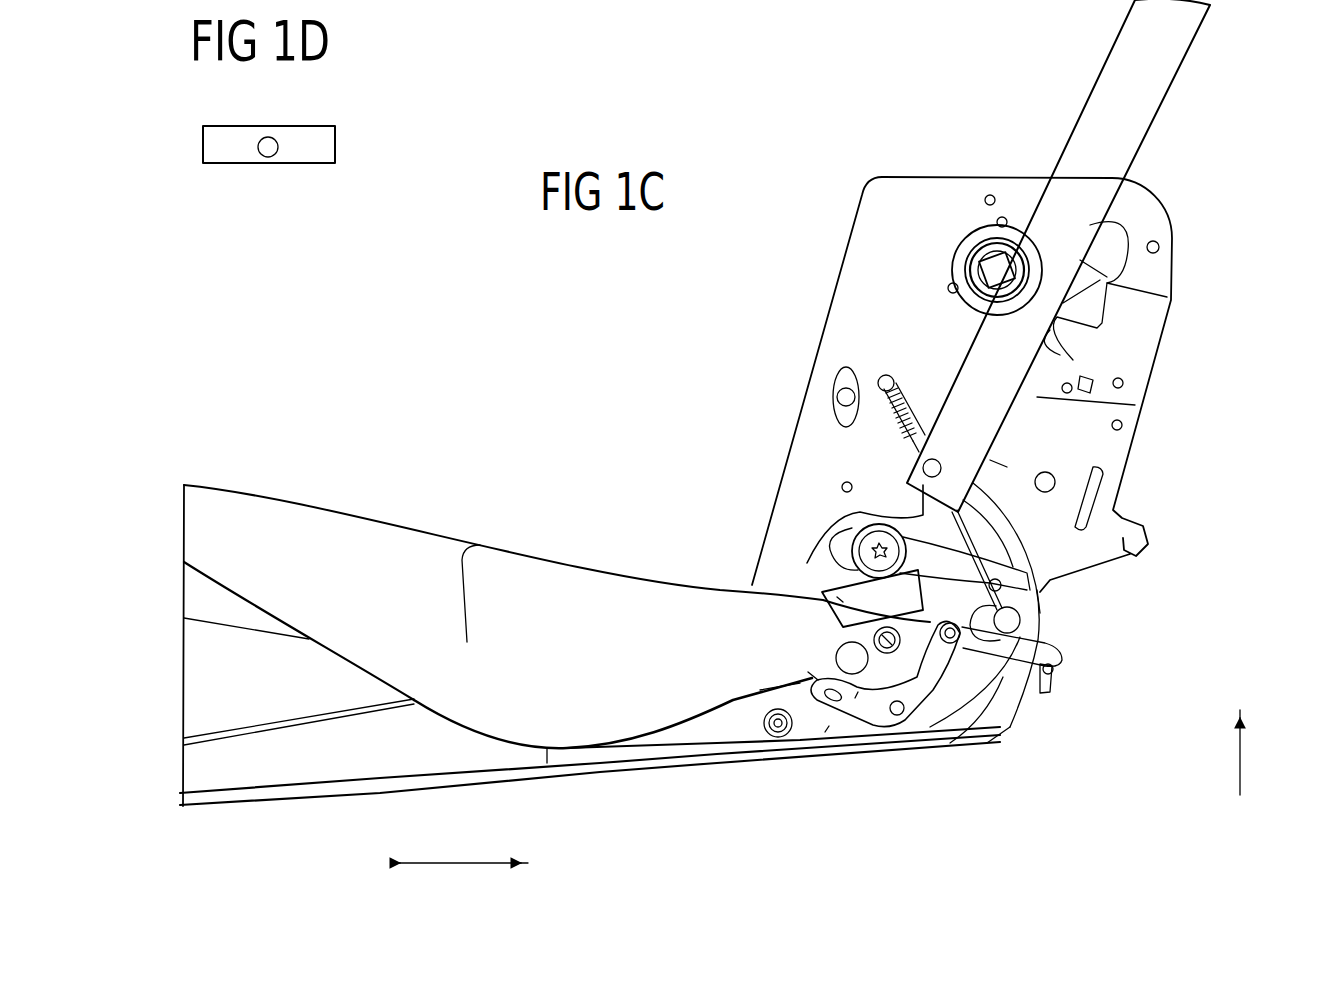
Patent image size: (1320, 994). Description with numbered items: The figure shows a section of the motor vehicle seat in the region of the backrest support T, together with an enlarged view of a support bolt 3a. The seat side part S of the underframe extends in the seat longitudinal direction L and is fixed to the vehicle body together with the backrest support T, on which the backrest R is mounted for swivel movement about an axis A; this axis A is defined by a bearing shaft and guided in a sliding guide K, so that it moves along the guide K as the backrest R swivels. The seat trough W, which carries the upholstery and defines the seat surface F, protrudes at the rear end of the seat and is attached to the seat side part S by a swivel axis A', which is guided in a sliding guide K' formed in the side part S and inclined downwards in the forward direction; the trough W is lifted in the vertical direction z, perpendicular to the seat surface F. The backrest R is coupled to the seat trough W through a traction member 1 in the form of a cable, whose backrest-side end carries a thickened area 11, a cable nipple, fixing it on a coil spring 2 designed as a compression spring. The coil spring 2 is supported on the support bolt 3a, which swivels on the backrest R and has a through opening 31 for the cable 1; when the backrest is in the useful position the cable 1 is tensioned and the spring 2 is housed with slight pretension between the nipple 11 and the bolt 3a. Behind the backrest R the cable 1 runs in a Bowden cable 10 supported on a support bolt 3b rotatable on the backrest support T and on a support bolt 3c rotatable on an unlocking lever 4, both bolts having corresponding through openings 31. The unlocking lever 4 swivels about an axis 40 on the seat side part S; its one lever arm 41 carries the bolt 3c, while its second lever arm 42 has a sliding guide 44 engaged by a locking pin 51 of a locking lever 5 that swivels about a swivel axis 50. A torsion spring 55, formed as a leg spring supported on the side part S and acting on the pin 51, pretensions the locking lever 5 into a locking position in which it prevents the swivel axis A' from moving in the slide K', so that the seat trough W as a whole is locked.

In FIG. 1D, the through opening 31 is at (268, 158).
In FIG. 1D, the support bolt 3a is at (316, 157).
In FIG. 1C, the support bolt 3a is at (937, 460).
In FIG. 1C, the traction member 1 is at (803, 597).
In FIG. 1C, the coil spring 2 is at (903, 438).
In FIG. 1C, the thickened area 11 is at (890, 375).
In FIG. 1C, the support bolt 3b is at (1015, 622).
In FIG. 1C, the support bolt 3c is at (962, 642).
In FIG. 1C, the Bowden cable 10 is at (1065, 658).
In FIG. 1C, the unlocking lever 4 is at (868, 735).
In FIG. 1C, the axis 40 is at (899, 715).
In FIG. 1C, the lever arm 41 is at (987, 743).
In FIG. 1C, the second lever arm 42 is at (855, 698).
In FIG. 1C, the sliding guide 44 is at (825, 732).
In FIG. 1C, the locking lever 5 is at (776, 690).
In FIG. 1C, the swivel axis 50 is at (790, 727).
In FIG. 1C, the locking pin 51 is at (852, 658).
In FIG. 1C, the torsion spring 55 is at (815, 712).
In FIG. 1C, the seat trough W is at (343, 527).
In FIG. 1C, the seat surface F is at (522, 553).
In FIG. 1C, the backrest R is at (1150, 117).
In FIG. 1C, the sliding guide K is at (1133, 277).
In FIG. 1C, the sliding guide K' is at (807, 570).
In FIG. 1C, the swivel axis A is at (997, 221).
In FIG. 1C, the swivel axis A' is at (794, 500).
In FIG. 1C, the backrest support T is at (1150, 338).
In FIG. 1C, the seat side part S is at (933, 720).
In FIG. 1C, the seat longitudinal direction L is at (460, 845).
In FIG. 1C, the vertical direction z is at (1253, 752).